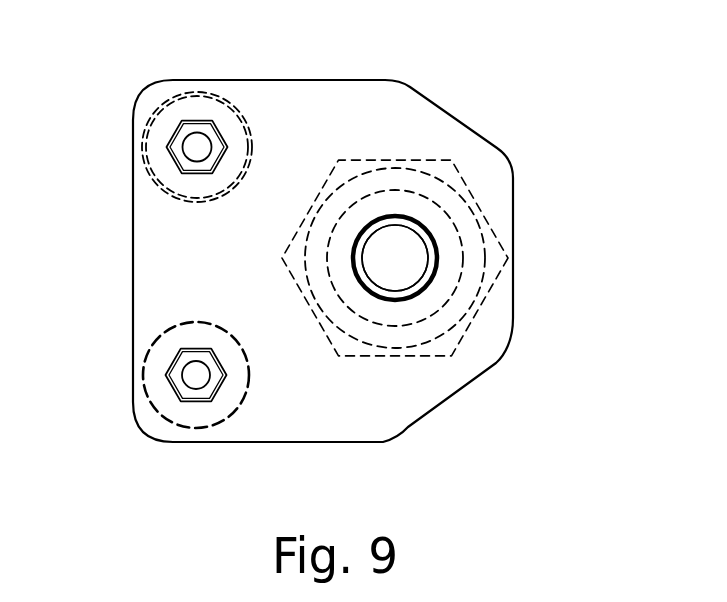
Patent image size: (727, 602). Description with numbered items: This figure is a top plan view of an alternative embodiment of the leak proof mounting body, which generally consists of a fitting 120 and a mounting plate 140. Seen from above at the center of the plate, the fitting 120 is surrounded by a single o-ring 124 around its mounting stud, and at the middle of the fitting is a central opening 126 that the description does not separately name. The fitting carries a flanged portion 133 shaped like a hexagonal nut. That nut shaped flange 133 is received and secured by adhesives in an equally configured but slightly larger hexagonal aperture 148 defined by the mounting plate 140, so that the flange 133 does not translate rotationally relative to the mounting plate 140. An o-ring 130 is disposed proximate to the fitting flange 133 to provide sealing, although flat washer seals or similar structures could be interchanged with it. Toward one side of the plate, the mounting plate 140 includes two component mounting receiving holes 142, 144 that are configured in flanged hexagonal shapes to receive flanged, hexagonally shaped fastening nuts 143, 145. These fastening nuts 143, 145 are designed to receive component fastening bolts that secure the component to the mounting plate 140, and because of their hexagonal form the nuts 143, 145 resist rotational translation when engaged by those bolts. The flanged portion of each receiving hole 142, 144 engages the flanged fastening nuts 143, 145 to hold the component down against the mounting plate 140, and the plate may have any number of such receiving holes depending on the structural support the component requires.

The fitting 120 is at (375, 289).
The o-ring 124 is at (395, 215).
The central opening 126 is at (397, 252).
The o-ring 130 is at (443, 328).
The flanged portion 133 is at (467, 186).
The mounting plate 140 is at (133, 269).
The component mounting receiving hole 142 is at (197, 175).
The fastening nut 143 is at (200, 130).
The component mounting receiving hole 144 is at (217, 356).
The fastening nut 145 is at (192, 357).
The aperture 148 is at (497, 238).